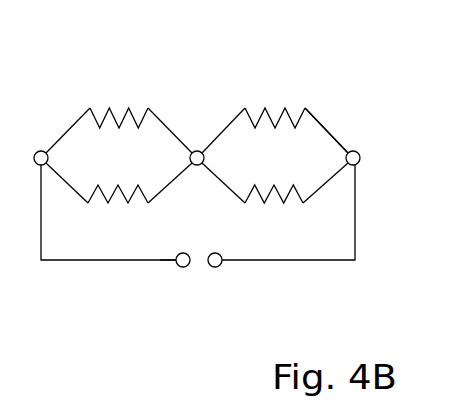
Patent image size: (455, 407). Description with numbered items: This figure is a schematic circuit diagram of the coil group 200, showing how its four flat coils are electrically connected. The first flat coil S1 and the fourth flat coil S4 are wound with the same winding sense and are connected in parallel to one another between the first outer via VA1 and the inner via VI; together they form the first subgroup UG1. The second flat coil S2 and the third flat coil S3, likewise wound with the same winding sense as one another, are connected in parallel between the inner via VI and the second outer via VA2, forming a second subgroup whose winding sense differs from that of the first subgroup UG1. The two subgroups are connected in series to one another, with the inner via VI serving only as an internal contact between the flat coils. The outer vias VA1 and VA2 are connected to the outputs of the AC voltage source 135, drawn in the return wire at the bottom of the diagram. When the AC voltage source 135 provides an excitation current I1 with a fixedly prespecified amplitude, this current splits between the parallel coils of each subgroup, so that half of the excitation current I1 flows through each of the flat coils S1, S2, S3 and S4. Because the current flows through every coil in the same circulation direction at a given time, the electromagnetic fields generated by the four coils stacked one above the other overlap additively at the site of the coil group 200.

The first outer via VA1 is at (42, 151).
The inner via VI is at (197, 151).
The second outer via VA2 is at (357, 153).
The first flat coil S1 is at (125, 118).
The second flat coil S2 is at (280, 118).
The third flat coil S3 is at (275, 197).
The fourth flat coil S4 is at (120, 197).
The first subgroup UG1 is at (122, 82).
The excitation current I1 is at (210, 247).
The AC voltage source 135 is at (197, 265).
The coil group 200 is at (376, 276).